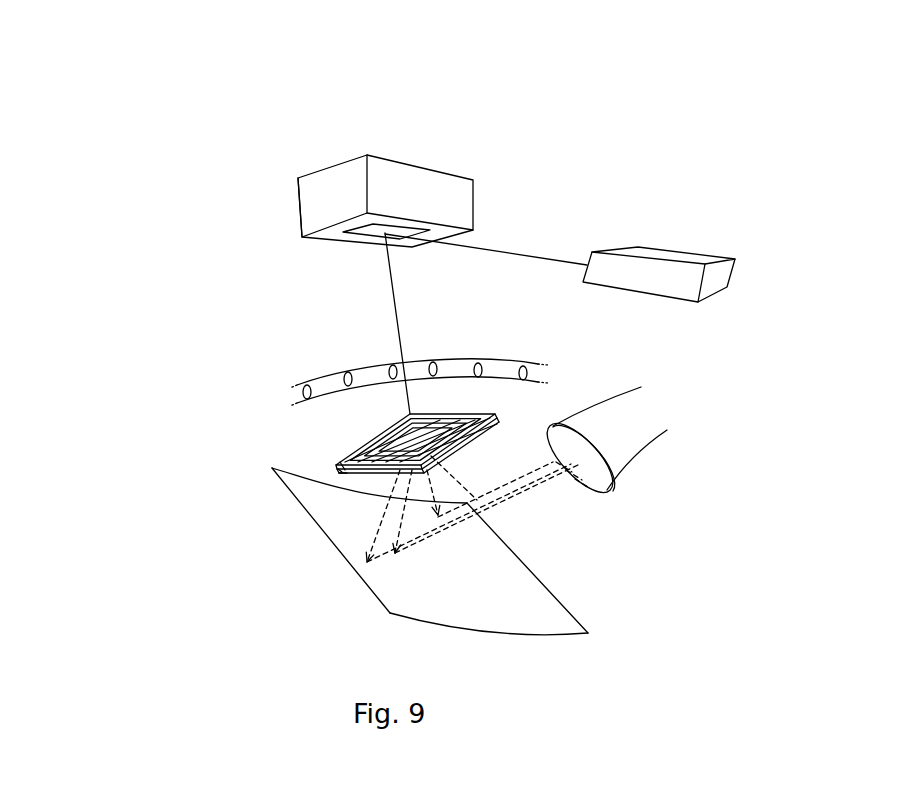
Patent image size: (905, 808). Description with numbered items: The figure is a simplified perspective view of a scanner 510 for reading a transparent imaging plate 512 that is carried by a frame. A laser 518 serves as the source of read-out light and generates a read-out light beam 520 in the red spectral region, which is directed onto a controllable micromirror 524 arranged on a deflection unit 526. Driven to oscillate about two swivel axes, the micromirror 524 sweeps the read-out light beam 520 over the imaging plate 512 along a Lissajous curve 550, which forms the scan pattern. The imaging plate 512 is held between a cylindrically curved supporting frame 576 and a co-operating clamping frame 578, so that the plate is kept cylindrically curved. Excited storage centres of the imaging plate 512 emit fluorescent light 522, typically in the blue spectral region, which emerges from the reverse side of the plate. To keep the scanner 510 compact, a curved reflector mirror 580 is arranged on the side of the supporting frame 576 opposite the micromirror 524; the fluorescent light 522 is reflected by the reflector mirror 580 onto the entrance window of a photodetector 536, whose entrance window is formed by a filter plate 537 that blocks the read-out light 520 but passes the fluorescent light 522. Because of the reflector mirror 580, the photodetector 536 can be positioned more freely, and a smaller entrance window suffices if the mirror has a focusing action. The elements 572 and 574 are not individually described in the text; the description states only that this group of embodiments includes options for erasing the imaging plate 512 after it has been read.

The scanner 510 is at (228, 168).
The transparent imaging plate 512 is at (342, 472).
The laser 518 is at (658, 257).
The read-out light beam 520 is at (487, 245).
The fluorescent light 522 is at (510, 503).
The micromirror 524 is at (373, 230).
The deflection unit 526 is at (393, 177).
The photodetector 536 is at (623, 452).
The filter plate 537 is at (613, 487).
The Lissajous curve 550 is at (453, 418).
The LED strip 572 is at (327, 387).
The LED 574 is at (348, 376).
The supporting frame 576 is at (347, 473).
The clamping frame 578 is at (350, 470).
The reflector mirror 580 is at (393, 590).